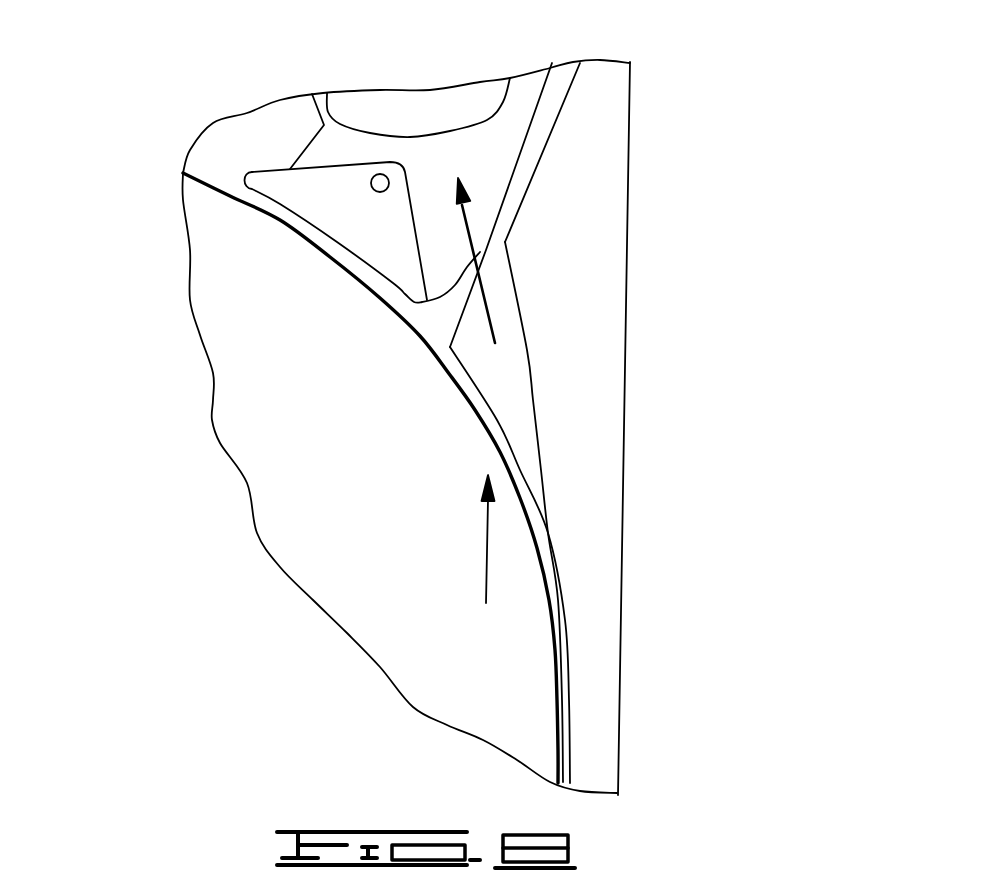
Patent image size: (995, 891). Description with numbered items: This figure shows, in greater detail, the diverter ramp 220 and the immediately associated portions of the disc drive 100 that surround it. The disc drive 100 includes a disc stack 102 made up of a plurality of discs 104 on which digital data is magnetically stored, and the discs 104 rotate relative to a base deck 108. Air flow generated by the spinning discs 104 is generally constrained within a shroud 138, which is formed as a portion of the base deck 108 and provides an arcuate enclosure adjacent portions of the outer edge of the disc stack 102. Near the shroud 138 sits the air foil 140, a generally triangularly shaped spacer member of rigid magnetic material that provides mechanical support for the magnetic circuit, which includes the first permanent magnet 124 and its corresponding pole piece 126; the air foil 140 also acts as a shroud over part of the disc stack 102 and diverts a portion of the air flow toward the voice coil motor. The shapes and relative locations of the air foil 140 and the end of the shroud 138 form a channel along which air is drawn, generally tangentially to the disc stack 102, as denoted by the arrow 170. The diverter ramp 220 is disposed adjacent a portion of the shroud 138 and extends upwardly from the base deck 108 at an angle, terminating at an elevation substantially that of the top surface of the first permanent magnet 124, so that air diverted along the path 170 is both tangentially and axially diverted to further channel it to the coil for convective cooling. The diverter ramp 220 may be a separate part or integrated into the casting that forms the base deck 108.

The disc drive 100 is at (162, 351).
The disc stack 102 is at (222, 261).
The discs 104 is at (280, 460).
The base deck 108 is at (600, 404).
The first permanent magnet 124 is at (400, 103).
The pole piece 126 is at (530, 107).
The shroud 138 is at (570, 660).
The air foil 140 is at (287, 185).
The air flow path arrow 170 is at (485, 547).
The diverter ramp 220 is at (497, 387).